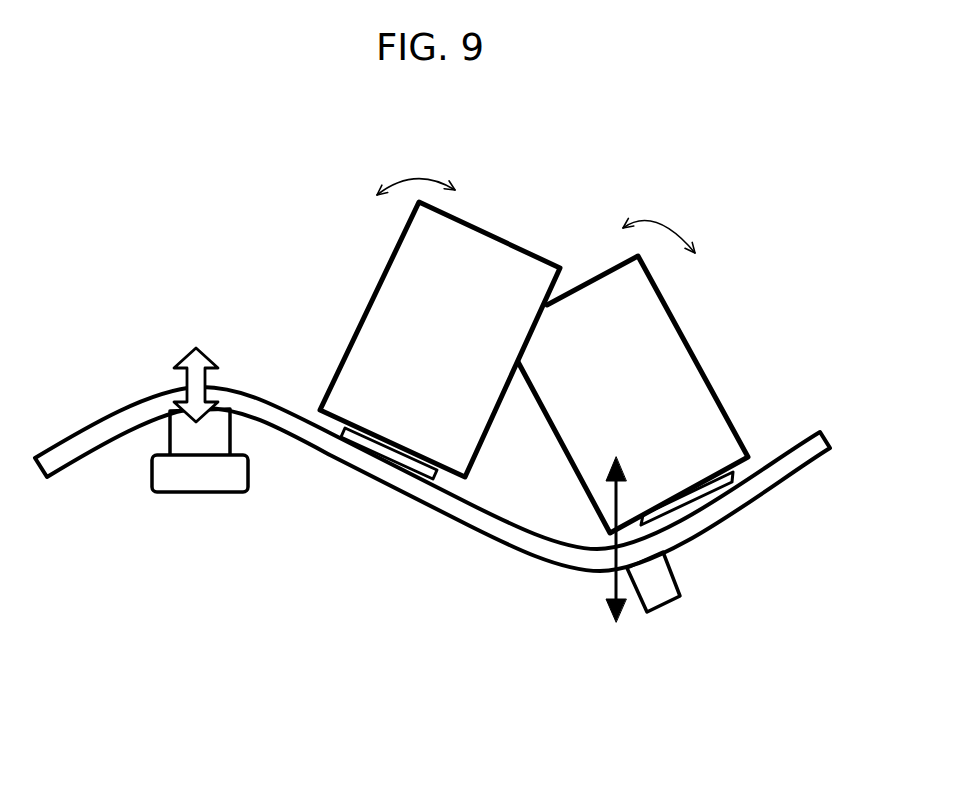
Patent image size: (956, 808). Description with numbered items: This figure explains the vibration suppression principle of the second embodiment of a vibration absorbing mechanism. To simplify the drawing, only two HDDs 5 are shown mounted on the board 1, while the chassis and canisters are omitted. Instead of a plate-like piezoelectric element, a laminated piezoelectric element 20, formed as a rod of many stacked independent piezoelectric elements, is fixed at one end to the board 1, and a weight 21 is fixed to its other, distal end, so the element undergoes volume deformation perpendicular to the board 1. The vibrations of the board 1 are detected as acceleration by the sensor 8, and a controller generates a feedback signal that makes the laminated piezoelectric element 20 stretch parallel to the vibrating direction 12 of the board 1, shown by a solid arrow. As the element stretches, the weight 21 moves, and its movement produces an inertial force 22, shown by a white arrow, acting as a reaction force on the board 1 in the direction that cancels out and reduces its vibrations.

The board 1 is at (568, 568).
The HDD 5 is at (607, 303).
The sensor 8 is at (633, 590).
The vibrating direction 12 is at (612, 587).
The laminated piezoelectric element 20 is at (170, 437).
The weight 21 is at (225, 493).
The inertial force 22 is at (187, 383).